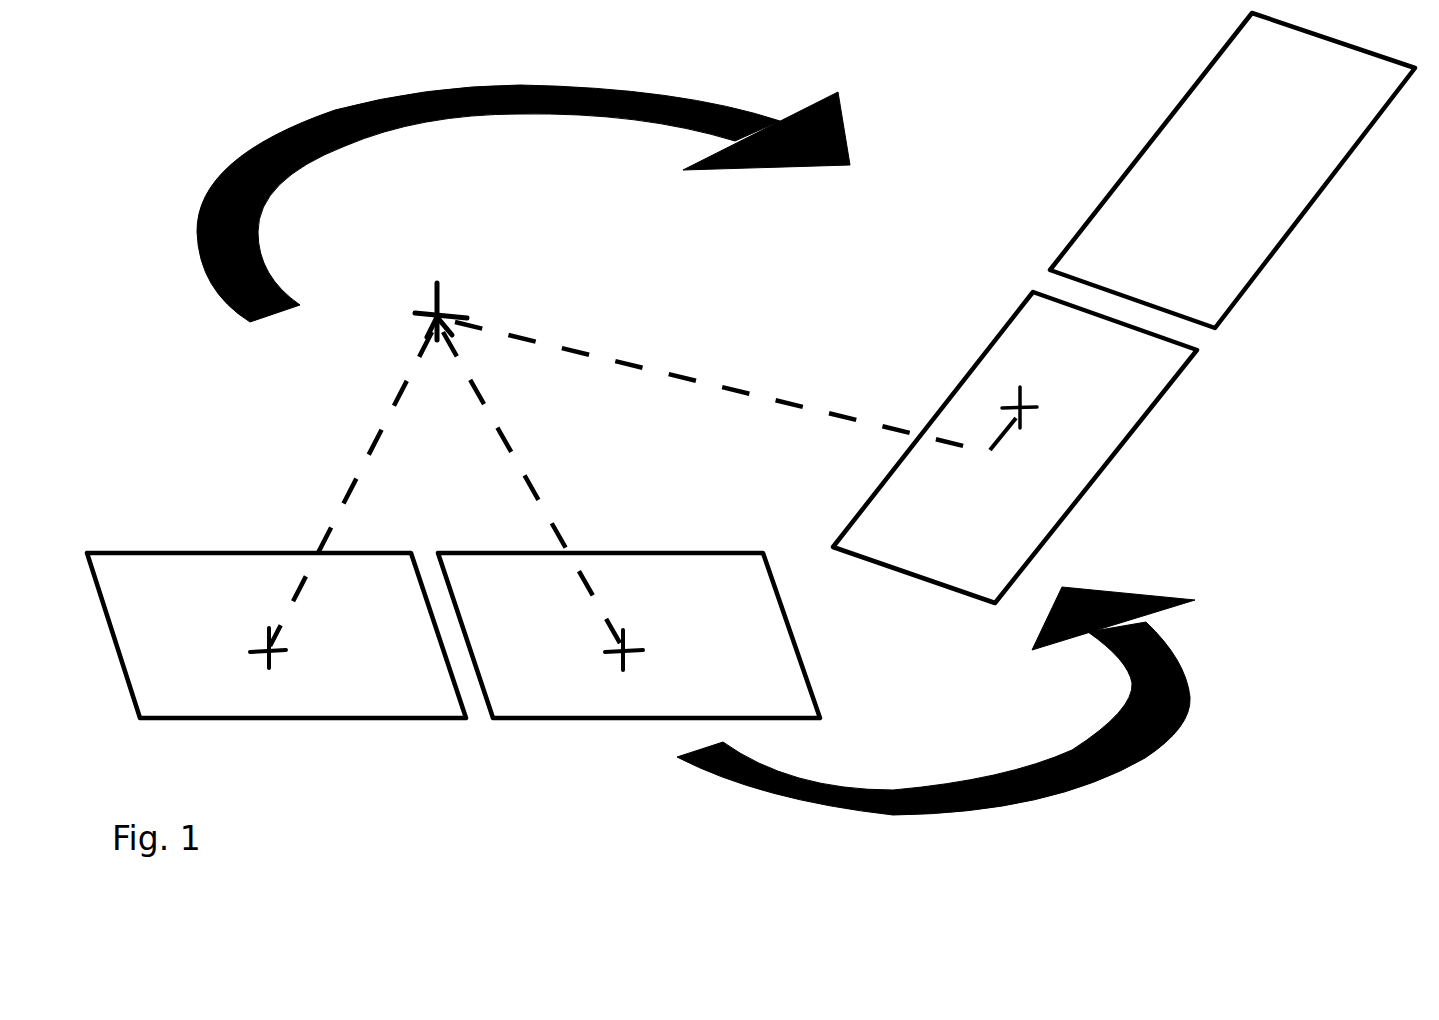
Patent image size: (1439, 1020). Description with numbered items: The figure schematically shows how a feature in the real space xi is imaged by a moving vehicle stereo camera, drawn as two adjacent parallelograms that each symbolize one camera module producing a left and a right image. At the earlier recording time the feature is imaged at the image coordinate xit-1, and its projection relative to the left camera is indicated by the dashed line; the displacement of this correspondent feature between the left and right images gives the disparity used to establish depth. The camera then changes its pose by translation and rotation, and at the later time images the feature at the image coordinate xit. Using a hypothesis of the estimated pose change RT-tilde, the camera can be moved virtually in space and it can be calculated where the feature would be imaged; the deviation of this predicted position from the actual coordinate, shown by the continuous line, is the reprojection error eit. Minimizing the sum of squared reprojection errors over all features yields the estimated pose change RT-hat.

The hypothesis of the estimated pose change RT-tilde is at (523, 203).
The feature in the real space xi is at (429, 289).
The image coordinate at time t-1 xit-1 is at (308, 667).
The image coordinate at time t xit is at (1038, 393).
The reprojection error eit is at (993, 448).
The estimated pose change RT-hat is at (936, 701).